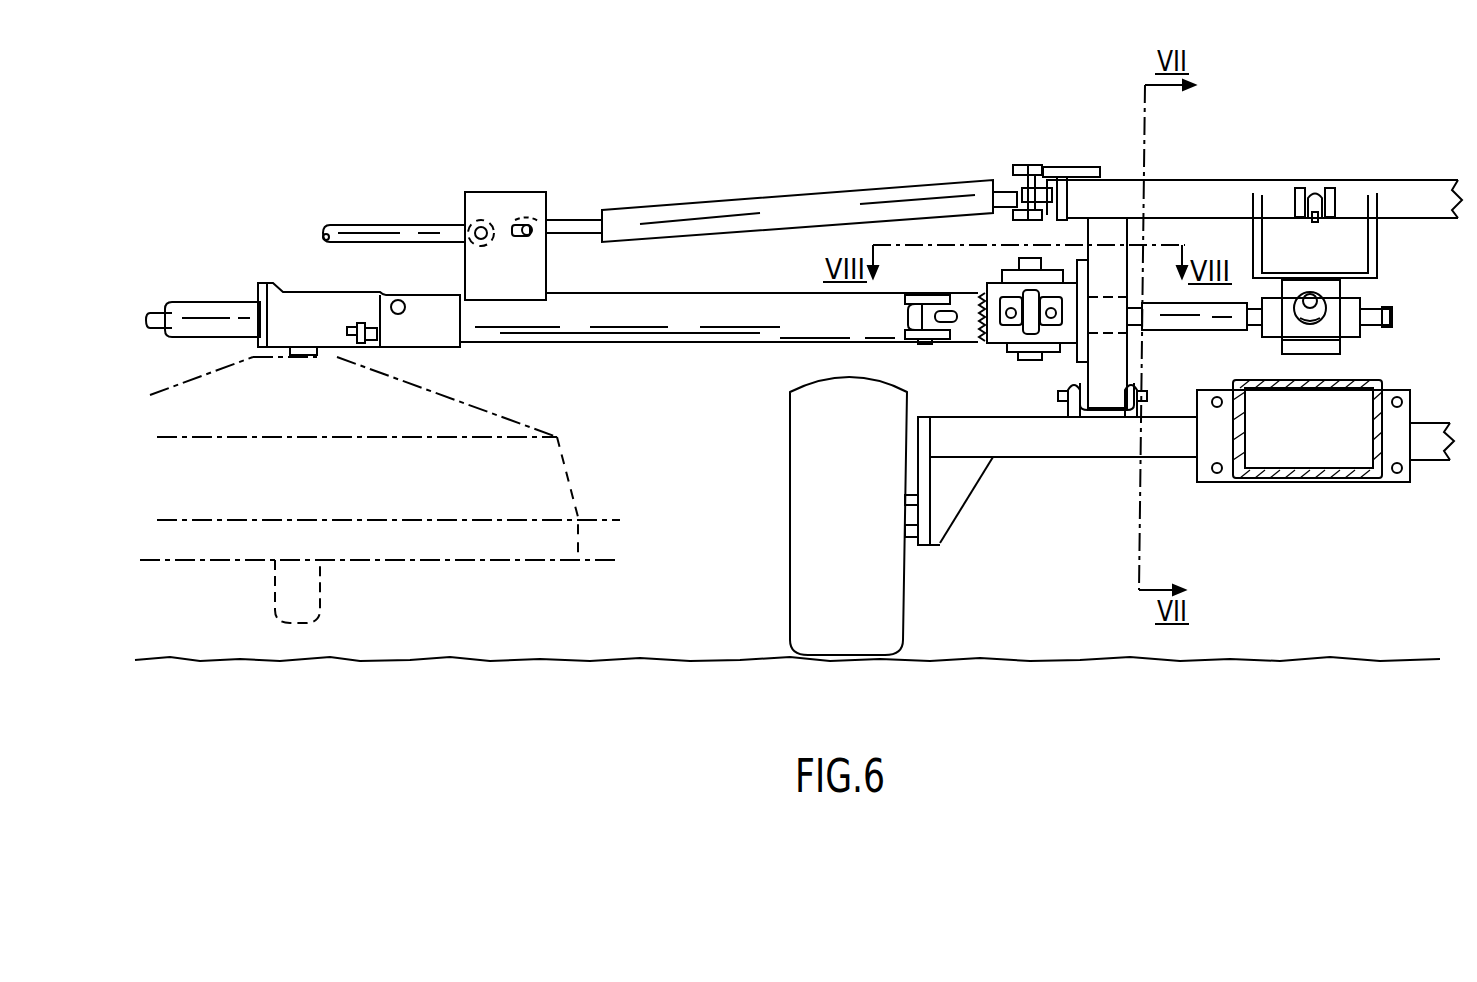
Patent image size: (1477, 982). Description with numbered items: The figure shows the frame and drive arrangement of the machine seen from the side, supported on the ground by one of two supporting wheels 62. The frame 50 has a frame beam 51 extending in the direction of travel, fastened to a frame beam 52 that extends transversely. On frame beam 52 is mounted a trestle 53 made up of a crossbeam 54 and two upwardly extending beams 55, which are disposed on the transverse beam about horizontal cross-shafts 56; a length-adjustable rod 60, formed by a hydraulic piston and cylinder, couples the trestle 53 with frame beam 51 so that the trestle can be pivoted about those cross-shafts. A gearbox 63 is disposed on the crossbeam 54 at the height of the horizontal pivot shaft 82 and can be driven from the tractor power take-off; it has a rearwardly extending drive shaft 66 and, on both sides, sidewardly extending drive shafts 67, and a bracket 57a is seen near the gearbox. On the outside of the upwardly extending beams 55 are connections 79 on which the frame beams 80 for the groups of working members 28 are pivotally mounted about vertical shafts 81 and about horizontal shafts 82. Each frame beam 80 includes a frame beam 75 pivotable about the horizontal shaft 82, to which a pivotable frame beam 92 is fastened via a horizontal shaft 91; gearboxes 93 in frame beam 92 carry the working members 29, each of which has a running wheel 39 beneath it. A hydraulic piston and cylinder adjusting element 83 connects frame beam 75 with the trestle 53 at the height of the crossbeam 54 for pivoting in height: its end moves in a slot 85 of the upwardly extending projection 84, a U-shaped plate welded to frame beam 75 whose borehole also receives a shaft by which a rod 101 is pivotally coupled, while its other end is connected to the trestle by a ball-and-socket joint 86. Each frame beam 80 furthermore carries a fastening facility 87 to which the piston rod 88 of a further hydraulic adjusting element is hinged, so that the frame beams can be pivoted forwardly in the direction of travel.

The group of working members 28 is at (228, 568).
The working member 29 is at (565, 440).
The running wheel 39 is at (322, 597).
The frame 50 is at (1351, 487).
The frame beam 51 is at (1305, 467).
The frame beam 52 is at (1110, 450).
The trestle 53 is at (1250, 178).
The crossbeam 54 is at (1186, 180).
The upwardly extending beam 55 is at (1100, 372).
The horizontal cross-shaft 56 is at (1148, 393).
The U-bracket 57a is at (1378, 244).
The rod 60 is at (1313, 220).
The supporting wheel 62 is at (1395, 318).
The gearbox 63 is at (1338, 349).
The drive shaft 66 is at (1313, 302).
The drive shaft 67 is at (1256, 330).
The frame beam 75 is at (712, 330).
The connection 79 is at (1010, 364).
The frame beam 80 is at (672, 262).
The vertical shaft 81 is at (1030, 262).
The horizontal pivot shaft 82 is at (1007, 335).
The adjusting element 83 is at (740, 210).
The projection 84 is at (512, 192).
The slot 85 is at (520, 236).
The ball-and-socket joint 86 is at (1045, 170).
The fastening facility 87 is at (928, 297).
The piston rod 88 is at (942, 333).
The horizontal shaft 91 is at (402, 300).
The frame beam 92 is at (228, 302).
The gearbox 93 is at (295, 310).
The rod 101 is at (370, 223).